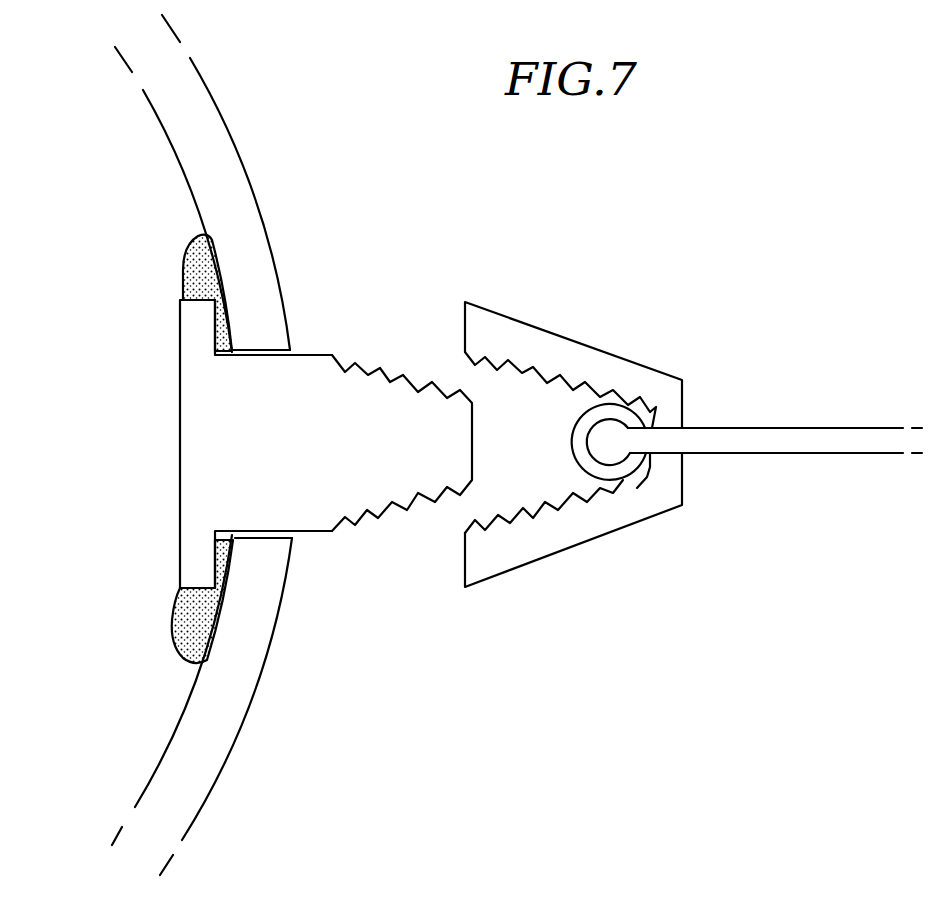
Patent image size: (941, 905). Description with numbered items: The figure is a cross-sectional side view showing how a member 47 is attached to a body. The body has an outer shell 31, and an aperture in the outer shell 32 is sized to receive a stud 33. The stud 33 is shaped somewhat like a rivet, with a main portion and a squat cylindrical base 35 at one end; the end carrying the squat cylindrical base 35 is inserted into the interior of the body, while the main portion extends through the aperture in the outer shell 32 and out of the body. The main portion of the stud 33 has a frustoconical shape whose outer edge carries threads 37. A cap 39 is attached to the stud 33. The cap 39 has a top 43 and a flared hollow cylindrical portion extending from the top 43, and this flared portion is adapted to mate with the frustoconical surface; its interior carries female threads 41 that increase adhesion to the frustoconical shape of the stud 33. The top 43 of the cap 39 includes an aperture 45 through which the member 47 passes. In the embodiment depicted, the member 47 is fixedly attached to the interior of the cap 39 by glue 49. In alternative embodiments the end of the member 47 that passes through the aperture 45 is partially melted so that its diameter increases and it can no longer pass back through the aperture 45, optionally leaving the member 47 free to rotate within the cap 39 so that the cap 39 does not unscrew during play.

The outer shell 31 is at (235, 143).
The aperture in the outer shell 32 is at (290, 355).
The stud 33 is at (279, 421).
The squat cylindrical base 35 is at (180, 473).
The threads 37 is at (381, 370).
The cap 39 is at (529, 541).
The female threads 41 is at (545, 503).
The top 43 is at (682, 405).
The aperture 45 is at (684, 428).
The member 47 is at (785, 442).
The glue 49 is at (588, 422).